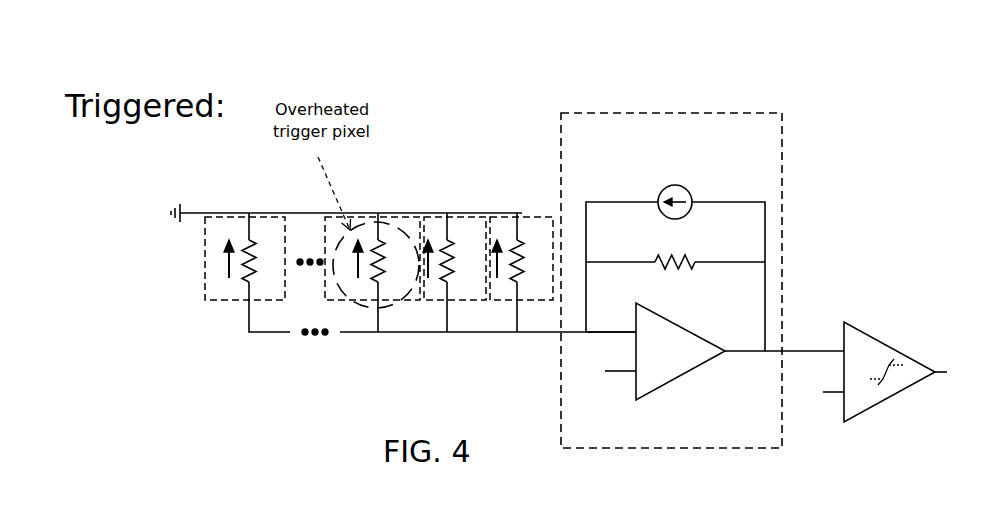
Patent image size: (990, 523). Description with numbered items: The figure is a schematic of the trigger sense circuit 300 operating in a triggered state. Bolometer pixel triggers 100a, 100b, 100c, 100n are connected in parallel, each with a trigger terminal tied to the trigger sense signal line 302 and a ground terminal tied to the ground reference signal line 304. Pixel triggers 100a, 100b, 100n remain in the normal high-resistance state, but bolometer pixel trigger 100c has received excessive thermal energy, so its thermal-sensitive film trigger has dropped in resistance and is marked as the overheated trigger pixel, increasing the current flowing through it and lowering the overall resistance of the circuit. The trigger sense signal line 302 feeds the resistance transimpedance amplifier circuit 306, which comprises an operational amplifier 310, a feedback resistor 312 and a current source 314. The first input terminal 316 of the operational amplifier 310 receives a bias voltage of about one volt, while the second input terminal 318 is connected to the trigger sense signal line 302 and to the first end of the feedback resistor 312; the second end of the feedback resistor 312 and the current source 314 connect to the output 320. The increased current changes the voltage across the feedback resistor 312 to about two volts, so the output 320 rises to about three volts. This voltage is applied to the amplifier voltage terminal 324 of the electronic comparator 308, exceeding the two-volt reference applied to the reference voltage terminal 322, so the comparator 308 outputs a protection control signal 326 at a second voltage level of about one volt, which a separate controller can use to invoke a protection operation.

The trigger sense circuit 300 is at (130, 258).
The ground reference signal line 304 is at (302, 213).
The trigger sense signal line 302 is at (267, 334).
The bolometer pixel trigger 100n is at (205, 303).
The bolometer pixel trigger 100c is at (350, 303).
The bolometer pixel trigger 100b is at (432, 303).
The bolometer pixel trigger 100a is at (503, 303).
The resistance transimpedance amplifier circuit 306 is at (784, 137).
The current source 314 is at (679, 186).
The feedback resistor 312 is at (697, 266).
The second input terminal 318 is at (620, 330).
The first input terminal 316 is at (614, 375).
The operational amplifier 310 is at (675, 375).
The output 320 is at (737, 352).
The RTIA voltage terminal 324 is at (830, 349).
The electronic comparator 308 is at (876, 335).
The reference voltage terminal 322 is at (832, 394).
The protection control signal 326 is at (940, 368).